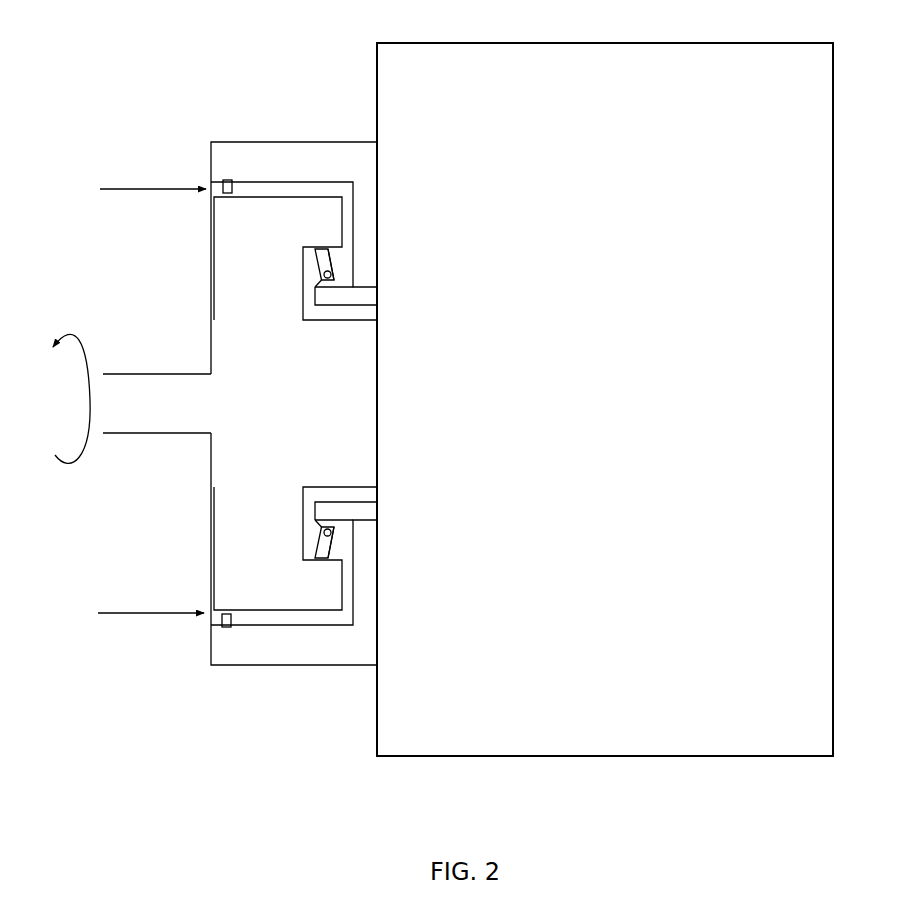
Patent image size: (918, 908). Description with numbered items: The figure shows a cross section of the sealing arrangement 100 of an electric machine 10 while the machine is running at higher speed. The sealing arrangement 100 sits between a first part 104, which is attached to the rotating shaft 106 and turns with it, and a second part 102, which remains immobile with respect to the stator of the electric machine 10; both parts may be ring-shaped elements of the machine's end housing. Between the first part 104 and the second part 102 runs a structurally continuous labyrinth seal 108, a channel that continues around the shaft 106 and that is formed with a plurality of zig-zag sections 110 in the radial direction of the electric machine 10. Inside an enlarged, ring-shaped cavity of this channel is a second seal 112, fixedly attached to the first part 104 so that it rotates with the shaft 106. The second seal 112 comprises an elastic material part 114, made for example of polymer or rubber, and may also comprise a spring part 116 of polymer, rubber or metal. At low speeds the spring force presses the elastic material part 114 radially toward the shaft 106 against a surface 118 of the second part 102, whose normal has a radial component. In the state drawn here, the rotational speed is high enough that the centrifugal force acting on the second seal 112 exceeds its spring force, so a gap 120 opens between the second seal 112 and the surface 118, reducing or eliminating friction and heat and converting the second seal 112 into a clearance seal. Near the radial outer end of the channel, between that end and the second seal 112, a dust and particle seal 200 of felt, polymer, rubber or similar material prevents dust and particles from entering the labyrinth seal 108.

The electric machine 10 is at (428, 116).
The sealing arrangement 100 is at (150, 99).
The second part 102 is at (253, 142).
The first part 104 is at (270, 296).
The shaft 106 is at (260, 418).
The labyrinth seal 108 is at (127, 407).
The zig-zag sections 110 is at (347, 219).
The second seal 112 is at (336, 258).
The elastic material part 114 is at (338, 268).
The spring part 116 is at (338, 277).
The surface 118 is at (334, 288).
The gap 120 is at (340, 290).
The dust and particle seal 200 is at (227, 180).